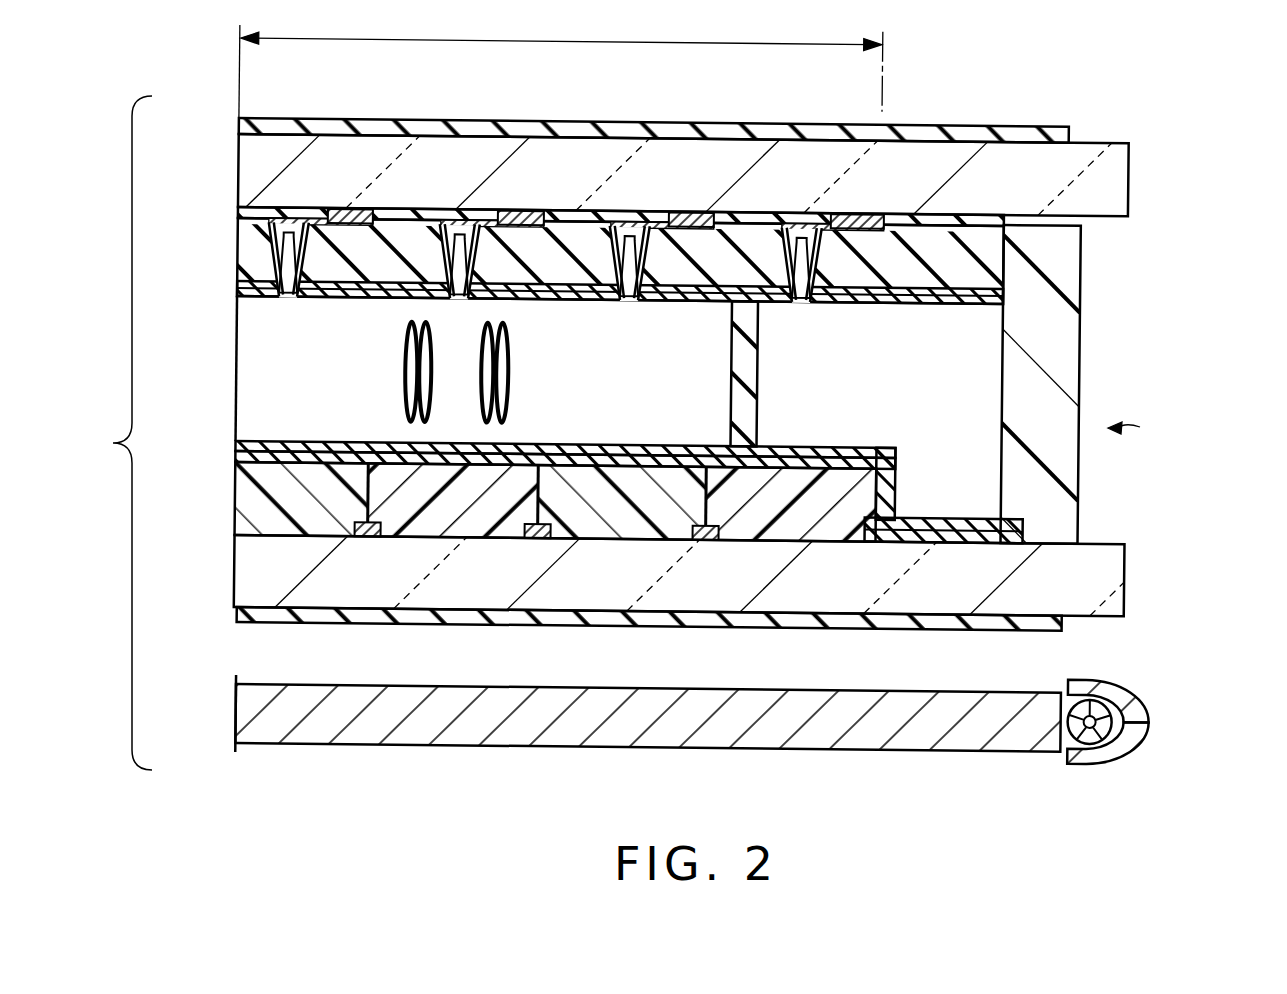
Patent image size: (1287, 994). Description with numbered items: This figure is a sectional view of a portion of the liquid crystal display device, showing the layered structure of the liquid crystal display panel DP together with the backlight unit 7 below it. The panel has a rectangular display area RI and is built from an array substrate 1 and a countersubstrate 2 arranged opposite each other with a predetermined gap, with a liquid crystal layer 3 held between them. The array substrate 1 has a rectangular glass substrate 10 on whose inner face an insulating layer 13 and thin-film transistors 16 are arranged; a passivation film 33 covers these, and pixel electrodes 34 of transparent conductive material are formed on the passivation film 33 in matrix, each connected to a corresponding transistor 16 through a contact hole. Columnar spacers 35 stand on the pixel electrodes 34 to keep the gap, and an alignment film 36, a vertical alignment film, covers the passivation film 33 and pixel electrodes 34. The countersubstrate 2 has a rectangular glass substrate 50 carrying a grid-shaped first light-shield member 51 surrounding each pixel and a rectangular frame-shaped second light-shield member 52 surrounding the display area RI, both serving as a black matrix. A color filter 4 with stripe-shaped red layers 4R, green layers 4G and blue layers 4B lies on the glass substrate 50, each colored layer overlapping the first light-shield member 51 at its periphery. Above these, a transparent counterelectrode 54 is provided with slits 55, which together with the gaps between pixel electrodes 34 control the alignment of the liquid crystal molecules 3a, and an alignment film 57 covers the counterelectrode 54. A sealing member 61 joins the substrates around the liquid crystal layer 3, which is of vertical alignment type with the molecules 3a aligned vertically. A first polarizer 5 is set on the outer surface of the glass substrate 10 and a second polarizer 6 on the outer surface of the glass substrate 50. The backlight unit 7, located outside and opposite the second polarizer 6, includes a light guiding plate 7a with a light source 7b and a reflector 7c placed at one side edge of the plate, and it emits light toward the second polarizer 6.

The display area RI is at (561, 67).
The glass substrate 10 is at (272, 158).
The first polarizer 5 is at (962, 131).
The insulating layer 13 is at (237, 212).
The array substrate 1 is at (227, 257).
The passivation film 33 is at (408, 240).
The pixel electrode 34 is at (342, 292).
The thin-film transistor 16 is at (355, 207).
The alignment film 36 is at (622, 296).
The liquid crystal layer 3 is at (237, 342).
The liquid crystal molecules 3a is at (418, 393).
The columnar spacer 35 is at (733, 368).
The sealing member 61 is at (1072, 347).
The liquid crystal display panel DP is at (1158, 427).
The slit 55 is at (282, 447).
The counterelectrode 54 is at (548, 455).
The alignment film 57 is at (868, 450).
The second light-shield member 52 is at (960, 540).
The color filter 4 is at (227, 500).
The red layer 4R is at (318, 498).
The blue layer 4B is at (450, 510).
The green layer 4G is at (620, 510).
The first light-shield member 51 is at (372, 518).
The countersubstrate 2 is at (227, 575).
The glass substrate 50 is at (505, 595).
The second polarizer 6 is at (897, 620).
The light guiding plate 7a is at (240, 712).
The backlight unit 7 is at (1172, 722).
The light source 7b is at (1110, 695).
The reflector 7c is at (1120, 766).